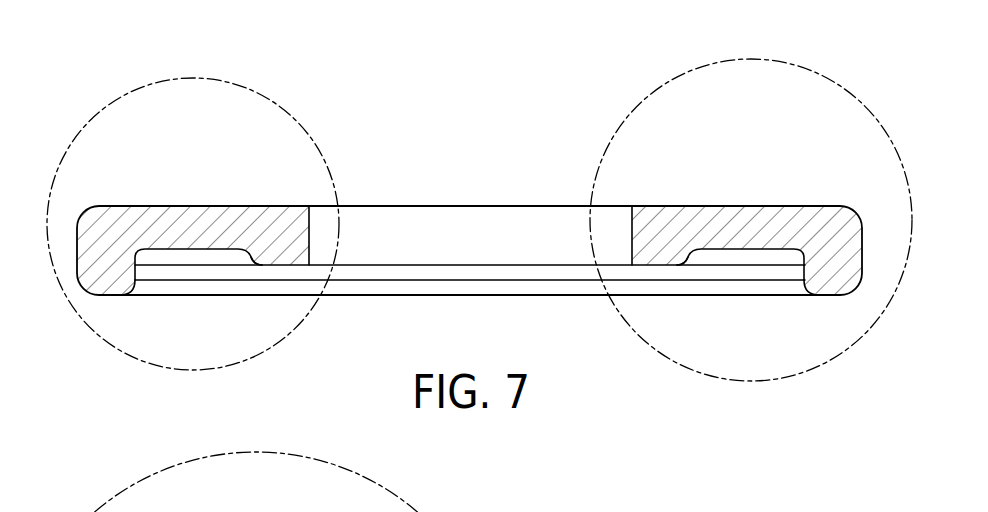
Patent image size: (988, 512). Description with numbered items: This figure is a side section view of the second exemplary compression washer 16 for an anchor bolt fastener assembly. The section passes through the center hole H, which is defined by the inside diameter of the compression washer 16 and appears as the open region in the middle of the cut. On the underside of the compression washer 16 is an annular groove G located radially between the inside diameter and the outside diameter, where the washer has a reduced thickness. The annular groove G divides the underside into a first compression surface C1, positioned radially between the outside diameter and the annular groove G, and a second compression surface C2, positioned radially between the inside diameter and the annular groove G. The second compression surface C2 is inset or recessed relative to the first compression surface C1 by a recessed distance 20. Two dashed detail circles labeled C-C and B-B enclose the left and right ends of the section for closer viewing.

The compression washer 16 is at (352, 97).
The recessed distance 20 is at (659, 232).
The center hole H is at (453, 240).
The annular groove G is at (197, 258).
The first compression surface C1 is at (113, 295).
The second compression surface C2 is at (267, 265).
The section detail C-C is at (145, 85).
The section detail B-B is at (800, 67).